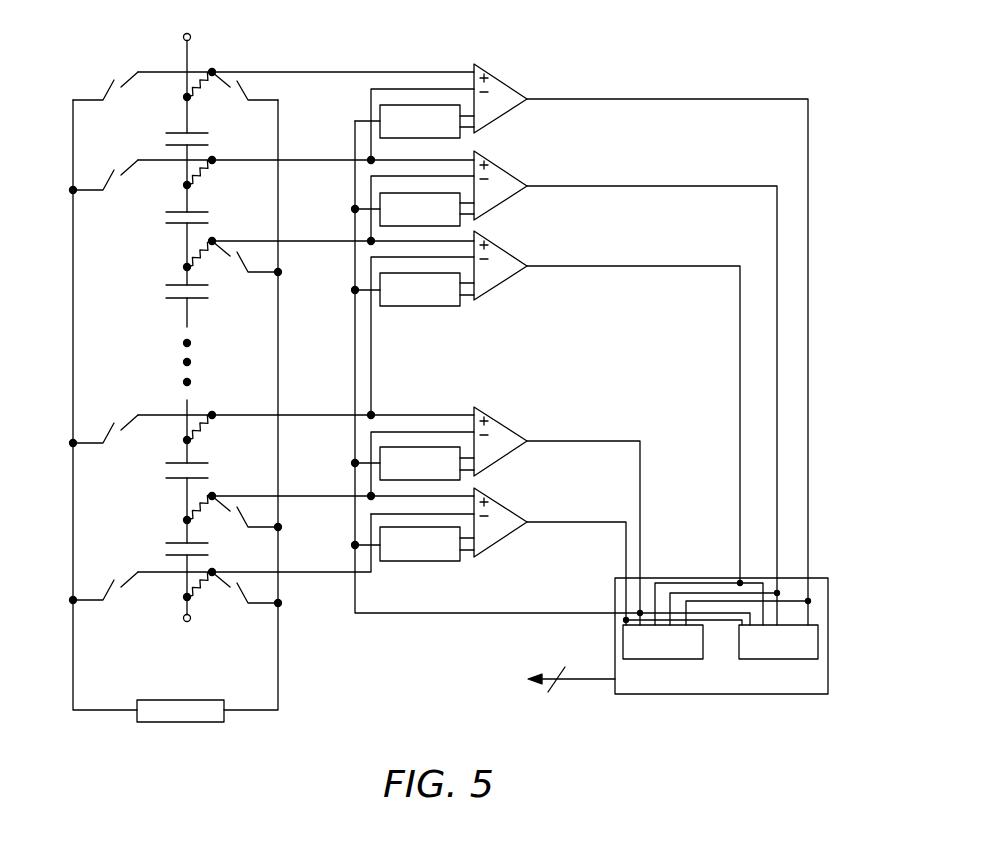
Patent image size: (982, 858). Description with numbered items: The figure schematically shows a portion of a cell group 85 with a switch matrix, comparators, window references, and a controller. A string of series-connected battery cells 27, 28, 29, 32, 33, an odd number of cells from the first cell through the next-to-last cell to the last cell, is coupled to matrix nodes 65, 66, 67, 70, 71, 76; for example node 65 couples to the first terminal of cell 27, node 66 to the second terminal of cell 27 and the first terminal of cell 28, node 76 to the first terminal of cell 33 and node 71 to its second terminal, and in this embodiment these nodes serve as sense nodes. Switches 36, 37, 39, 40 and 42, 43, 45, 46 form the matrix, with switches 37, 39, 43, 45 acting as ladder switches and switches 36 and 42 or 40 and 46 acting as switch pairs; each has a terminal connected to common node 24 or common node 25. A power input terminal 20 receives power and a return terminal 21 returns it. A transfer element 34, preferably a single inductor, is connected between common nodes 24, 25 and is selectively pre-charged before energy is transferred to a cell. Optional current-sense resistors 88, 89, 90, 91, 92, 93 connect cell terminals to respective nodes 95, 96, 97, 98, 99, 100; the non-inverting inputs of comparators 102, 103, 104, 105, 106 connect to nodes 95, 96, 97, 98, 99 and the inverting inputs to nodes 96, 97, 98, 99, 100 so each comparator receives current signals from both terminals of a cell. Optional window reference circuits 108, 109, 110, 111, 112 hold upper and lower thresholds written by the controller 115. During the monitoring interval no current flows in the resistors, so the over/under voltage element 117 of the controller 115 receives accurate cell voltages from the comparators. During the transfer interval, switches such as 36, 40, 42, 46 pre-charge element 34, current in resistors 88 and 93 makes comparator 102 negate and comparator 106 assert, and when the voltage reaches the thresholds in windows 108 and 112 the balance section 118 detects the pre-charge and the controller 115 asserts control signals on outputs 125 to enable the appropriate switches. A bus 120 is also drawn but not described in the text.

The cell group 85 is at (103, 52).
The power input terminal 20 is at (185, 33).
The power return terminal 21 is at (192, 628).
The common node 24 is at (73, 698).
The common node 25 is at (278, 698).
The battery cell 27 is at (203, 136).
The battery cell 28 is at (203, 215).
The battery cell 29 is at (200, 292).
The battery cell 32 is at (203, 474).
The battery cell 33 is at (170, 546).
The transfer element 34 is at (200, 725).
The switch 36 is at (110, 90).
The ladder switch 37 is at (108, 180).
The ladder switch 39 is at (108, 436).
The switch 40 is at (108, 595).
The switch 42 is at (245, 92).
The ladder switch 43 is at (245, 268).
The ladder switch 45 is at (245, 524).
The switch 46 is at (245, 600).
The node 65 is at (185, 99).
The node 66 is at (185, 188).
The node 67 is at (185, 269).
The node 70 is at (185, 443).
The node 71 is at (185, 518).
The node 76 is at (185, 600).
The resistor 88 is at (196, 93).
The resistor 89 is at (196, 180).
The resistor 90 is at (198, 258).
The resistor 91 is at (198, 432).
The resistor 92 is at (198, 512).
The resistor 93 is at (198, 590).
The node 95 is at (214, 70).
The node 96 is at (214, 160).
The node 97 is at (214, 243).
The node 98 is at (214, 413).
The node 99 is at (214, 498).
The node 100 is at (214, 574).
The comparator 102 is at (515, 88).
The comparator 103 is at (515, 174).
The comparator 104 is at (515, 254).
The comparator 105 is at (515, 431).
The comparator 106 is at (515, 512).
The window reference circuit 108 is at (360, 124).
The window reference circuit 109 is at (378, 220).
The window reference circuit 110 is at (378, 297).
The window reference circuit 111 is at (378, 474).
The window reference circuit 112 is at (433, 571).
The controller 115 is at (743, 651).
The over/under voltage element 117 is at (640, 662).
The balance section 118 is at (822, 655).
The reference bus line 120 is at (572, 611).
The outputs 125 is at (593, 678).